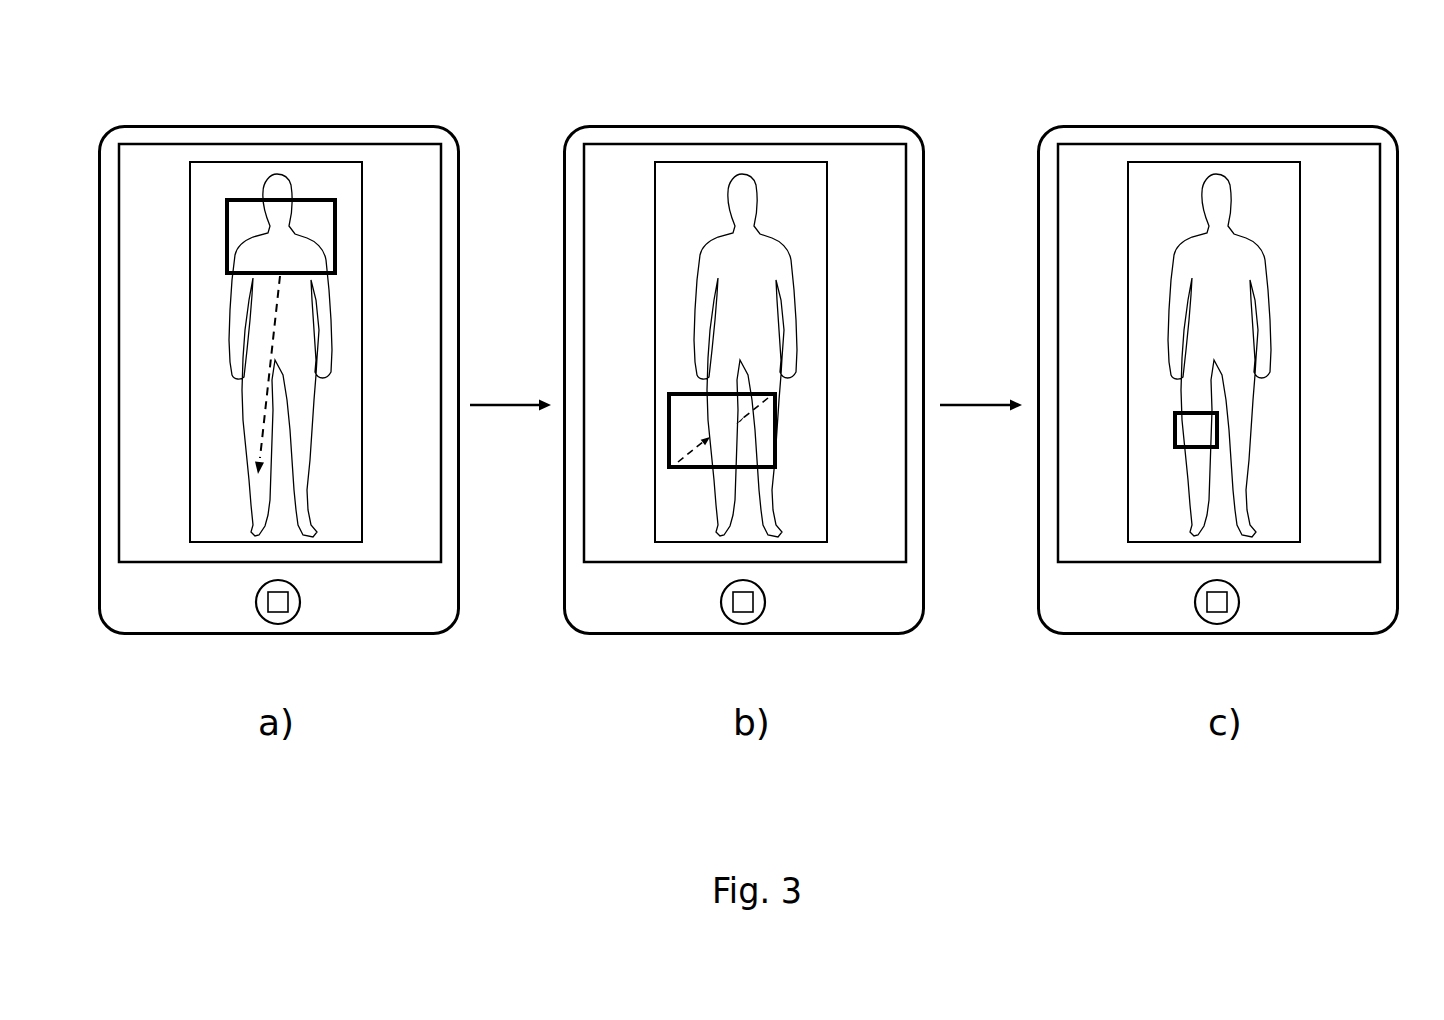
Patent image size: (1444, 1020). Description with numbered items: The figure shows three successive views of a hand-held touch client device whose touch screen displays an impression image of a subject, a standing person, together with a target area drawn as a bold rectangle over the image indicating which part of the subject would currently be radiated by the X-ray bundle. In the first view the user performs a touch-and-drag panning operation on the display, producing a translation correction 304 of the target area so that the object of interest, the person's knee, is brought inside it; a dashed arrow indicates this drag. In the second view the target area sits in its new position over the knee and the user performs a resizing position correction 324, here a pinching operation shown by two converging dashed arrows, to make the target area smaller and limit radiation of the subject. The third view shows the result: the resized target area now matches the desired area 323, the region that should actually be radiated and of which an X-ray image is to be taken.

The translation correction 304 is at (278, 312).
The desired area 323 is at (1219, 433).
The resizing position correction 324 is at (668, 452).